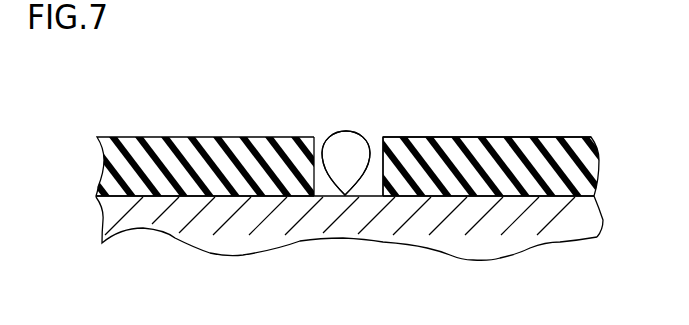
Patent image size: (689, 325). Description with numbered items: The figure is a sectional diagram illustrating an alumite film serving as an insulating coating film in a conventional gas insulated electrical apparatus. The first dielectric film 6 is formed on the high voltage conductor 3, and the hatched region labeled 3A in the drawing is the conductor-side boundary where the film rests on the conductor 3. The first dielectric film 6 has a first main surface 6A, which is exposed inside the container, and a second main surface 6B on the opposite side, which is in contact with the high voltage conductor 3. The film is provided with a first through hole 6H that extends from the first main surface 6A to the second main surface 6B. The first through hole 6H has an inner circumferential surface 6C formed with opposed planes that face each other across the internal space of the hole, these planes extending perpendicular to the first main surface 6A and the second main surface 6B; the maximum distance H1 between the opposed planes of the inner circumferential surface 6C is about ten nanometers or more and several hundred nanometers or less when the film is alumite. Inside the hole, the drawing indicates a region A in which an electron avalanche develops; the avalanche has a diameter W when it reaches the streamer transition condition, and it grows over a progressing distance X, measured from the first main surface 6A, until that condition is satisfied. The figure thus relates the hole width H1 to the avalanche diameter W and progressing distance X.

The high voltage conductor 3 is at (450, 226).
The substrate surface 3A is at (567, 195).
The first dielectric film 6 is at (190, 167).
The first main surface 6A is at (432, 137).
The second main surface 6B is at (490, 196).
The inner circumferential surface 6C is at (316, 172).
The first through hole 6H is at (388, 86).
The region A is at (350, 174).
The progressing distance X is at (402, 137).
The maximum distance H1 is at (383, 137).
The diameter of the electron avalanche W is at (377, 196).